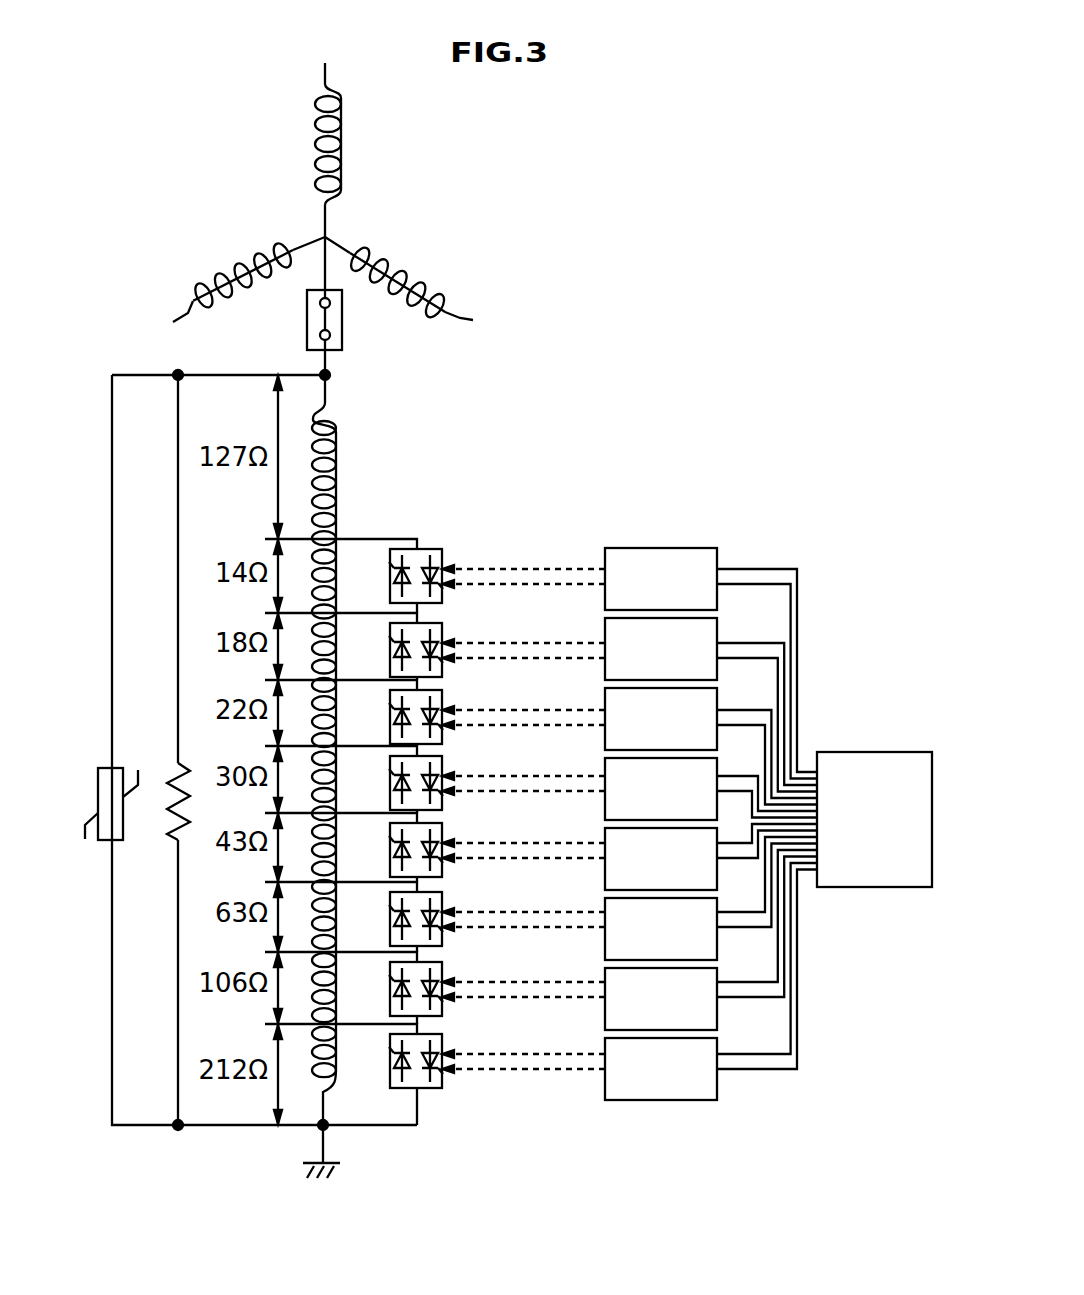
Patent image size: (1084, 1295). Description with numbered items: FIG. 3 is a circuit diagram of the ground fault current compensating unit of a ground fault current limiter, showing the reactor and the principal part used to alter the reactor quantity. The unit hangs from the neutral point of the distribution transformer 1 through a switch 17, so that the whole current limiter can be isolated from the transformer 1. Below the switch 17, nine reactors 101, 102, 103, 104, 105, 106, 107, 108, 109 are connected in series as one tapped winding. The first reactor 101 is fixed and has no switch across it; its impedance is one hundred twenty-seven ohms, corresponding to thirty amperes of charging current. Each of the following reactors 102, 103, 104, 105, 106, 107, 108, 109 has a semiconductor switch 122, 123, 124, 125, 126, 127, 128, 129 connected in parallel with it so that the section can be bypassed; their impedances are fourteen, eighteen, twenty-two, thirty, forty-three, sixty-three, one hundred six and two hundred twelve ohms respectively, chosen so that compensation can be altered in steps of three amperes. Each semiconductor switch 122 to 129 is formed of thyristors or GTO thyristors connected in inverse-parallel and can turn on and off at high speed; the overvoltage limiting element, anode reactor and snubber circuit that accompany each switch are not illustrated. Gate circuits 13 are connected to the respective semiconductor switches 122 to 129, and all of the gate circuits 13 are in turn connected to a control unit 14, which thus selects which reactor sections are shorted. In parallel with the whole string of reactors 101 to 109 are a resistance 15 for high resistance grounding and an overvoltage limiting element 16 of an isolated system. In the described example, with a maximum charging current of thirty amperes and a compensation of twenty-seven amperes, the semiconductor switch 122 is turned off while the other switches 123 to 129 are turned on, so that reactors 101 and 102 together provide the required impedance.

The distribution transformer 1 is at (258, 135).
The gate circuits 13 is at (717, 529).
The control unit 14 is at (862, 752).
The resistance for high resistance grounding 15 is at (162, 808).
The overvoltage limiting element 16 is at (104, 842).
The switch 17 is at (331, 335).
The reactor 101 is at (338, 458).
The reactor 102 is at (358, 586).
The reactor 103 is at (338, 644).
The reactor 104 is at (360, 716).
The reactor 105 is at (360, 776).
The reactor 106 is at (360, 848).
The reactor 107 is at (360, 923).
The reactor 108 is at (360, 994).
The reactor 109 is at (334, 1070).
The semiconductor switch 122 is at (442, 557).
The semiconductor switch 123 is at (442, 631).
The semiconductor switch 124 is at (442, 698).
The semiconductor switch 125 is at (442, 764).
The semiconductor switch 126 is at (442, 831).
The semiconductor switch 127 is at (442, 900).
The semiconductor switch 128 is at (442, 970).
The semiconductor switch 129 is at (442, 1042).